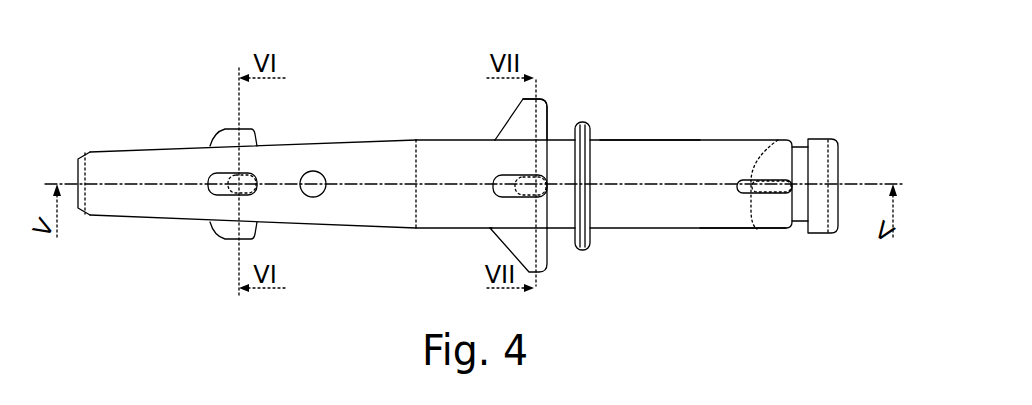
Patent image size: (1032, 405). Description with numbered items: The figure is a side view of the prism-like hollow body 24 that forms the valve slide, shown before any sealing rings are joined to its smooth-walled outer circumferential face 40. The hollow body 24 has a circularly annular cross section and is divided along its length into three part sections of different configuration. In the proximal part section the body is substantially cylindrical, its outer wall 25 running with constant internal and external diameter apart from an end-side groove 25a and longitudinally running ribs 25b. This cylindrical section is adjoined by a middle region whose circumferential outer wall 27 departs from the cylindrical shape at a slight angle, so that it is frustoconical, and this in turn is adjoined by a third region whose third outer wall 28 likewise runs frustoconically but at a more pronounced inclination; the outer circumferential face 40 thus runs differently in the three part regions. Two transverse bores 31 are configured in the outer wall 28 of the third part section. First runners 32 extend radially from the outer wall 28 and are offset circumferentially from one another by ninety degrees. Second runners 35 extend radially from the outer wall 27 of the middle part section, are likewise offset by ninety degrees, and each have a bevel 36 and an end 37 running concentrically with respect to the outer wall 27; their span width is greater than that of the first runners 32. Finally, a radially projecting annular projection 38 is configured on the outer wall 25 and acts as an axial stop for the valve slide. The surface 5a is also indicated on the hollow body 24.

The outer surface of shaft 5a is at (613, 153).
The hollow body 24 is at (673, 133).
The outer wall 25 is at (725, 217).
The end-side groove 25a is at (800, 143).
The longitudinally running ribs 25b is at (748, 178).
The circumferential outer wall 27 is at (433, 153).
The third outer wall 28 is at (145, 202).
The transverse bores 31 is at (311, 172).
The first runners 32 is at (225, 128).
The second runners 35 is at (530, 187).
The bevel 36 is at (497, 125).
The end 37 is at (537, 99).
The annular projection 38 is at (583, 210).
The outer circumferential face 40 is at (400, 228).